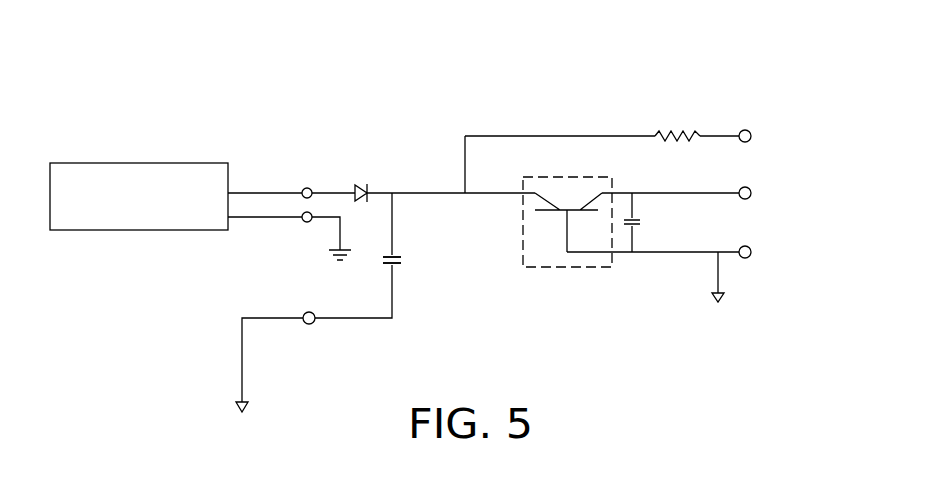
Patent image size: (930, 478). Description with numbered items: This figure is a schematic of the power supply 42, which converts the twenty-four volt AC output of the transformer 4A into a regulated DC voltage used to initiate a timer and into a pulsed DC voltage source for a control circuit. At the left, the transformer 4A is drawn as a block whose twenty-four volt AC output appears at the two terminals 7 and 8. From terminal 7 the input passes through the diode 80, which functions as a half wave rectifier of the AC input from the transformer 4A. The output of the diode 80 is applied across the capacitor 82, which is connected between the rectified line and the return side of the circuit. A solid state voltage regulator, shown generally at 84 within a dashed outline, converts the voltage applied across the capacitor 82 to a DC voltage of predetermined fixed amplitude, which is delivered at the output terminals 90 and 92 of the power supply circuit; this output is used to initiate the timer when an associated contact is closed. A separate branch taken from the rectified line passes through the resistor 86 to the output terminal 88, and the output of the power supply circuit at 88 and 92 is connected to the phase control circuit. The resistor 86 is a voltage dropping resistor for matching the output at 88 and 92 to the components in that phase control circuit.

The transformer 4A is at (135, 163).
The 24 VAC output 7 is at (302, 189).
The 24 VAC output 8 is at (305, 223).
The power supply 42 is at (480, 117).
The diode 80 is at (366, 186).
The capacitor 82 is at (398, 262).
The solid state voltage regulator 84 is at (570, 179).
The resistor 86 is at (668, 130).
The output of the power supply circuit 88 is at (748, 142).
The output of the power supply circuit 90 is at (748, 199).
The output of the power supply circuit 92 is at (748, 258).